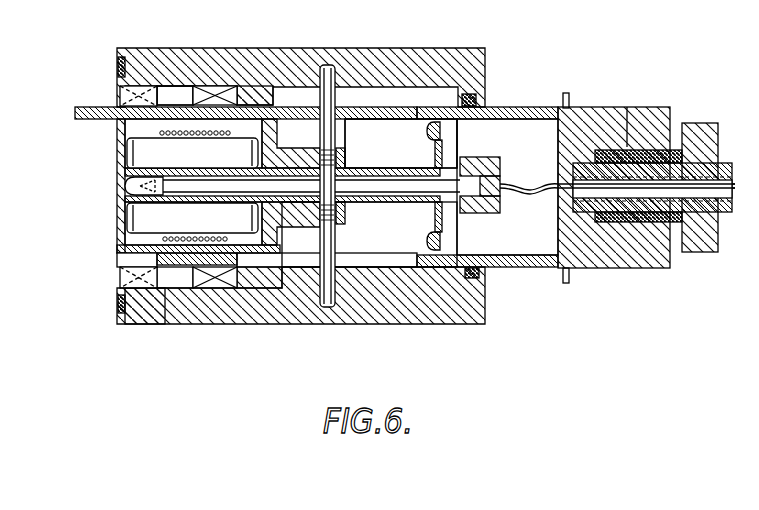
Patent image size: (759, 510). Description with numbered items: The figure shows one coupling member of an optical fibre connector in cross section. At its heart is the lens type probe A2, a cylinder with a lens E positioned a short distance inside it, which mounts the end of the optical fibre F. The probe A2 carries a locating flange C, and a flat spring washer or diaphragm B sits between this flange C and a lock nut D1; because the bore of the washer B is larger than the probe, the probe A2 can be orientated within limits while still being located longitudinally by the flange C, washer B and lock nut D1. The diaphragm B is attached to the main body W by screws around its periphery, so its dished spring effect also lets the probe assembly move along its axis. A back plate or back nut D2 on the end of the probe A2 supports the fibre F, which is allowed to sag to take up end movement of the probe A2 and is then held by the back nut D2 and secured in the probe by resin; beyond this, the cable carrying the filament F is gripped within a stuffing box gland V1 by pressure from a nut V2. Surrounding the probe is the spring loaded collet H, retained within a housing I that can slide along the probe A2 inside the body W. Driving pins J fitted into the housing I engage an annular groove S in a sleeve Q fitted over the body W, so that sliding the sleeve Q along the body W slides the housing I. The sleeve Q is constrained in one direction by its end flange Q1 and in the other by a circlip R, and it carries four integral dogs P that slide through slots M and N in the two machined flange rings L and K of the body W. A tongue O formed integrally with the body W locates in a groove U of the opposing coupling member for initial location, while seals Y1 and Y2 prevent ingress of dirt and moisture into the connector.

The seal Y2 is at (117, 62).
The dog P is at (143, 88).
The slot N is at (158, 80).
The slot M is at (218, 86).
The tongue O is at (80, 107).
The spring loaded collet H is at (140, 152).
The housing I is at (125, 213).
The lens E is at (123, 186).
The groove U is at (118, 260).
The flange ring K is at (118, 280).
The flange ring L is at (190, 288).
The sleeve Q is at (172, 305).
The driving pin J is at (330, 68).
The annular groove S is at (334, 300).
The probe A2 is at (378, 167).
The locating flange C is at (440, 168).
The flat spring washer B is at (435, 212).
The back plate D2 is at (475, 165).
The lock nut D1 is at (458, 218).
The optical fibre F is at (532, 184).
The end flange Q1 is at (487, 88).
The seal Y1 is at (482, 287).
The main body W is at (525, 107).
The circlip R is at (568, 96).
The stuffing box gland V1 is at (628, 162).
The nut V2 is at (700, 124).